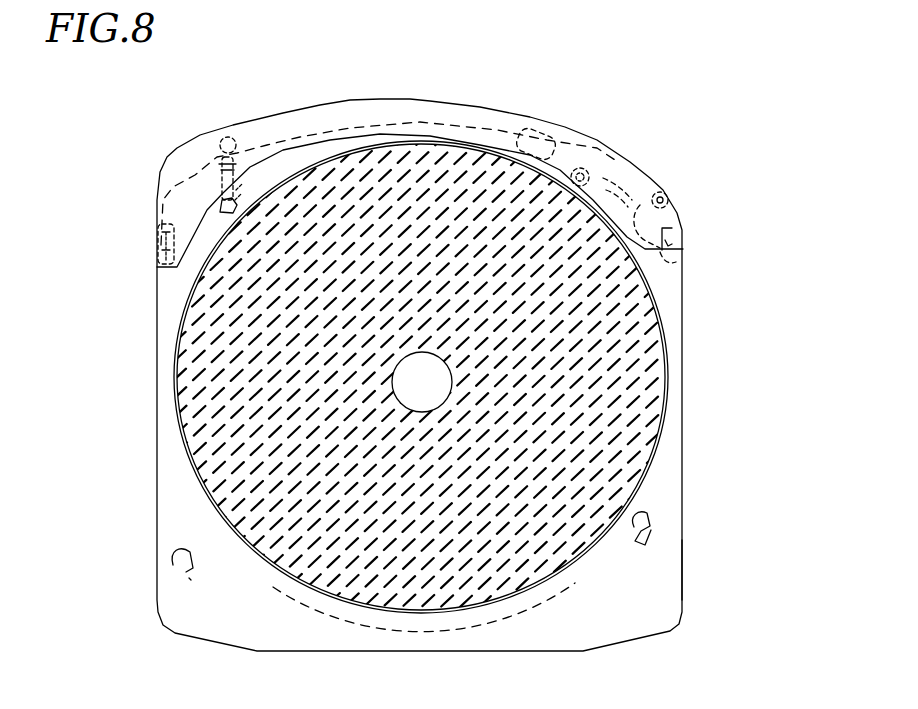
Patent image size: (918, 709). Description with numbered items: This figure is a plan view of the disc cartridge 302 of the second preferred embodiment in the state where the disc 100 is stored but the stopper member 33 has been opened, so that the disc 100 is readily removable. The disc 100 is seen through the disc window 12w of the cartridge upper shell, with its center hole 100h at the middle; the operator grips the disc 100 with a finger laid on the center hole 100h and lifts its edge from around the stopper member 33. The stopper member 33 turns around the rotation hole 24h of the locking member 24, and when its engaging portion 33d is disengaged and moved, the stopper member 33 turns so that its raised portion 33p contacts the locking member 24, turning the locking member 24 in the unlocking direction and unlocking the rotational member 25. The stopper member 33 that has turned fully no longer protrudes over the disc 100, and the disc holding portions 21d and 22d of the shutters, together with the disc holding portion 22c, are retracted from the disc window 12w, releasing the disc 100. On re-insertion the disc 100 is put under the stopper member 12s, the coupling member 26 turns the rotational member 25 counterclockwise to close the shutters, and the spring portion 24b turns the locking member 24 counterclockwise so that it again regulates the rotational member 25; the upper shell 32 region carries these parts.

The upper shell / housing 32 is at (672, 320).
The disc cartridge 302 is at (687, 560).
The disc window 12w is at (673, 413).
The disc 100 is at (627, 375).
The center hole 100h is at (422, 383).
The stopper member 12s is at (432, 622).
The stopper member 33 is at (324, 121).
The disc holding portion 22c is at (540, 148).
The raised portion 33p is at (590, 176).
The spring portion 24b is at (600, 174).
The rotation hole 24h is at (661, 194).
The locking member 24 is at (672, 228).
The coupling member 26 is at (221, 163).
The rotational member 25 is at (218, 209).
The engaging portion 33d is at (155, 262).
The disc holding portion 22d is at (658, 528).
The disc holding portion 21d is at (173, 557).